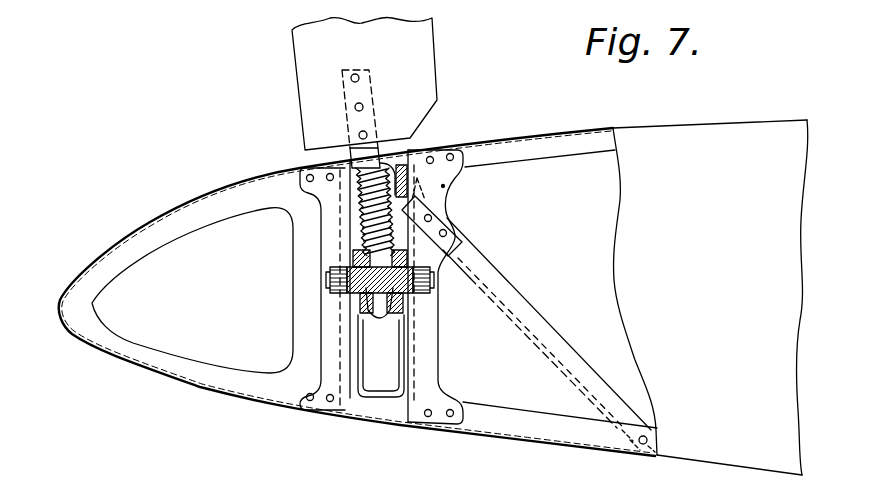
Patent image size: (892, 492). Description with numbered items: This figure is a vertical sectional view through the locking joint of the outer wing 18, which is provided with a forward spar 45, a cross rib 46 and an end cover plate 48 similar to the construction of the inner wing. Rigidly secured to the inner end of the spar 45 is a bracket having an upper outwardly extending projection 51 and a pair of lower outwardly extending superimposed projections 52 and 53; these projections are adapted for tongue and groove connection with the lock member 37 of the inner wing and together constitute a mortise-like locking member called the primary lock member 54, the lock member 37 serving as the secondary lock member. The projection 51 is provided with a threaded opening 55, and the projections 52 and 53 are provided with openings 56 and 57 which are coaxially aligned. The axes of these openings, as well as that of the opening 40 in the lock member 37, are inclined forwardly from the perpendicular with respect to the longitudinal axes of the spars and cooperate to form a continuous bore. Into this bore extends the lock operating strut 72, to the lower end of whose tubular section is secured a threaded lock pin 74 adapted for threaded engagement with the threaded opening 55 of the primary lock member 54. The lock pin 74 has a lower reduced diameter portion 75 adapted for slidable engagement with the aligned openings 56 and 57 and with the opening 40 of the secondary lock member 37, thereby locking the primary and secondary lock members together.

The outer wing 18 is at (751, 116).
The lock member 37 is at (352, 307).
The opening 40 is at (363, 307).
The forward spar 45 is at (408, 347).
The cross rib 46 is at (562, 150).
The end cover plate 48 is at (637, 298).
The upper outwardly extending projection 51 is at (396, 186).
The lower outwardly extending projection 52 is at (412, 252).
The lower outwardly extending projection 53 is at (388, 304).
The primary lock member 54 is at (444, 186).
The threaded opening 55 is at (350, 228).
The opening 56 is at (408, 262).
The opening 57 is at (385, 313).
The lock operating strut 72 is at (420, 43).
The threaded lock pin 74 is at (378, 152).
The lower reduced diameter portion 75 is at (381, 356).